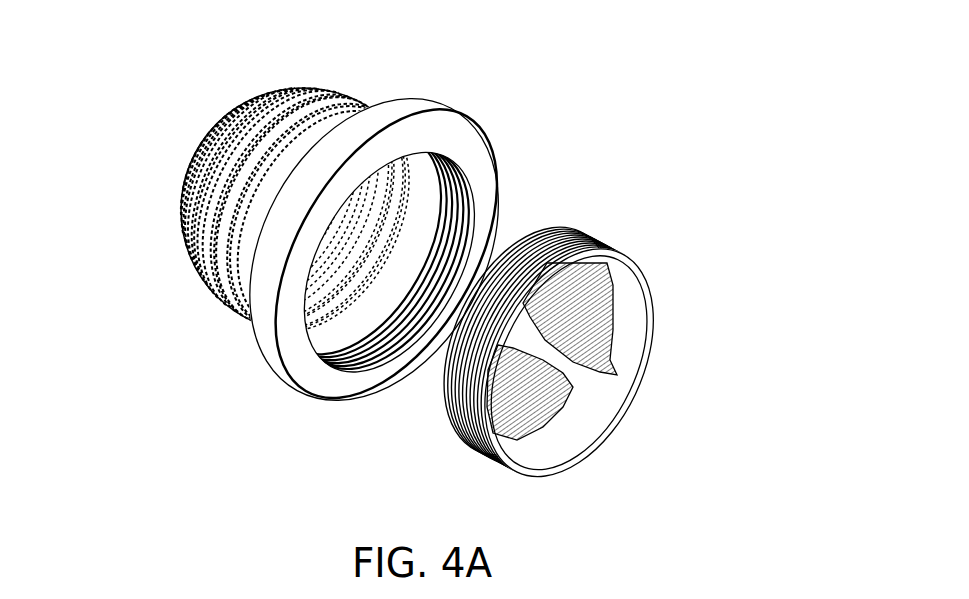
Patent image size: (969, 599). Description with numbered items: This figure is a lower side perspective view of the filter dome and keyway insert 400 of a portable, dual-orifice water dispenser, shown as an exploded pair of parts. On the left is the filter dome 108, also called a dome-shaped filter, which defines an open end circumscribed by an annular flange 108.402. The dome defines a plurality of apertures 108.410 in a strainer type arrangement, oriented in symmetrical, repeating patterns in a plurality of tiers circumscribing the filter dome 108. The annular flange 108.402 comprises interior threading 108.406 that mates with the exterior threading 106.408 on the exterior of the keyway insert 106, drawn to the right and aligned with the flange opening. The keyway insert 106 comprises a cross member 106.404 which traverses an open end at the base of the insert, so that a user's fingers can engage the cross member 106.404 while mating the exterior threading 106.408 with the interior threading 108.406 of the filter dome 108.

The filter dome and keyway insert 400 is at (107, 115).
The filter dome 108 is at (327, 132).
The annular flange 108.402 is at (487, 178).
The apertures 108.410 is at (197, 188).
The interior threading 108.406 is at (390, 333).
The keyway insert 106 is at (573, 263).
The cross member 106.404 is at (533, 337).
The exterior threading 106.408 is at (470, 343).